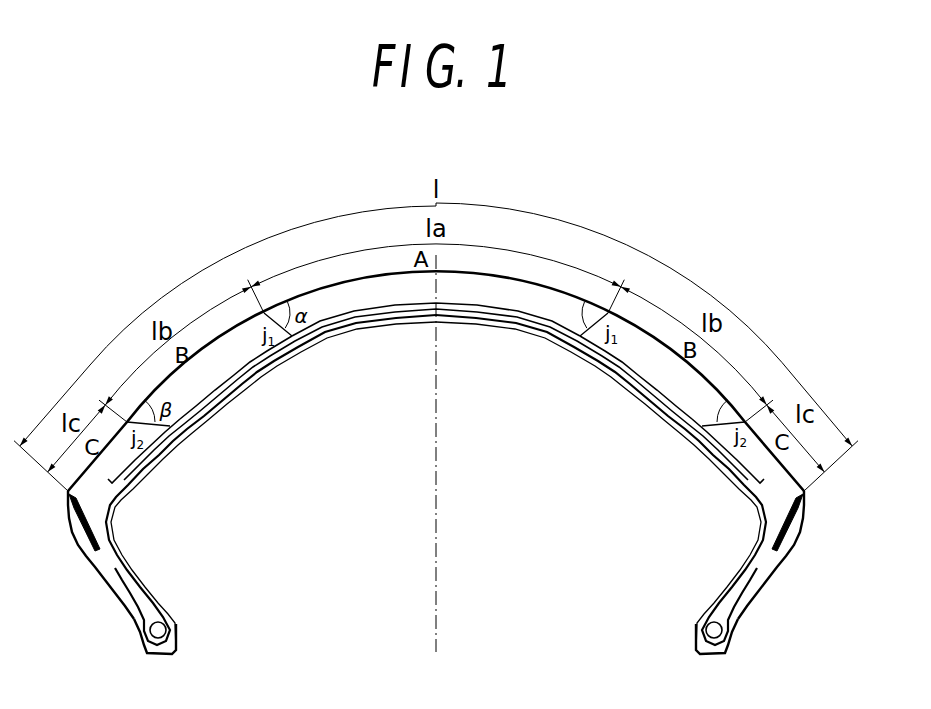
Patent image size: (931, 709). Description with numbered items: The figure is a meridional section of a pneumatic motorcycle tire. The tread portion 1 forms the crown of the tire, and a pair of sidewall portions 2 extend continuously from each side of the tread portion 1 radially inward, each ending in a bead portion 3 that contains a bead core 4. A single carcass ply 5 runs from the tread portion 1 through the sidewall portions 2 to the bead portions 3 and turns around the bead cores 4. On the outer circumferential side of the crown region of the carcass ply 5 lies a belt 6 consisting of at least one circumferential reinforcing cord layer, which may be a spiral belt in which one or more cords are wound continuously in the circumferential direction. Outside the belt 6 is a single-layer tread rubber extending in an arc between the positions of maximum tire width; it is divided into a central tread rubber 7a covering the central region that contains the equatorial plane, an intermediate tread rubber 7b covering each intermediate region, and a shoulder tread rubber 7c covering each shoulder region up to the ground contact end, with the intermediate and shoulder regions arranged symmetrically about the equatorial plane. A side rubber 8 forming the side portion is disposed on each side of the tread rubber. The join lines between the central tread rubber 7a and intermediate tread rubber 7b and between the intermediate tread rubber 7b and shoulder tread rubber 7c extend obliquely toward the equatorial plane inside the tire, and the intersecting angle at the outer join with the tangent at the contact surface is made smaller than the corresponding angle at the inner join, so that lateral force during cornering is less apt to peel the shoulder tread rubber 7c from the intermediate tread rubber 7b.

The tread portion 1 is at (637, 323).
The sidewall portion 2 is at (787, 551).
The bead portion 3 is at (745, 640).
The bead core 4 is at (712, 630).
The carcass ply 5 is at (708, 447).
The belt 6 is at (670, 408).
The central tread rubber 7a is at (410, 285).
The intermediate tread rubber 7b is at (223, 360).
The shoulder tread rubber 7c is at (118, 458).
The side rubber 8 is at (103, 552).